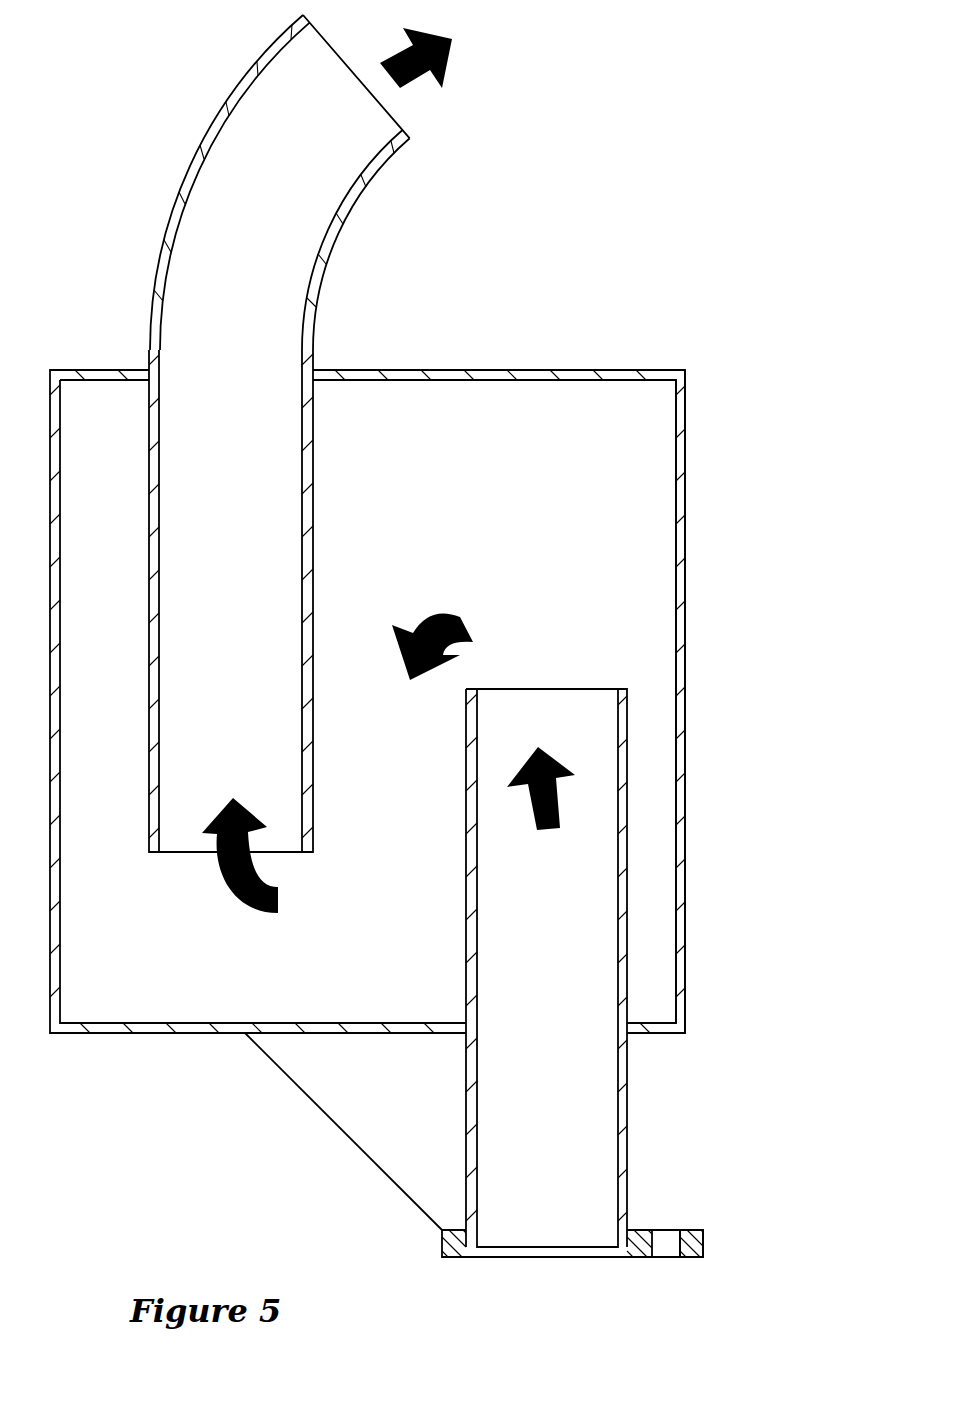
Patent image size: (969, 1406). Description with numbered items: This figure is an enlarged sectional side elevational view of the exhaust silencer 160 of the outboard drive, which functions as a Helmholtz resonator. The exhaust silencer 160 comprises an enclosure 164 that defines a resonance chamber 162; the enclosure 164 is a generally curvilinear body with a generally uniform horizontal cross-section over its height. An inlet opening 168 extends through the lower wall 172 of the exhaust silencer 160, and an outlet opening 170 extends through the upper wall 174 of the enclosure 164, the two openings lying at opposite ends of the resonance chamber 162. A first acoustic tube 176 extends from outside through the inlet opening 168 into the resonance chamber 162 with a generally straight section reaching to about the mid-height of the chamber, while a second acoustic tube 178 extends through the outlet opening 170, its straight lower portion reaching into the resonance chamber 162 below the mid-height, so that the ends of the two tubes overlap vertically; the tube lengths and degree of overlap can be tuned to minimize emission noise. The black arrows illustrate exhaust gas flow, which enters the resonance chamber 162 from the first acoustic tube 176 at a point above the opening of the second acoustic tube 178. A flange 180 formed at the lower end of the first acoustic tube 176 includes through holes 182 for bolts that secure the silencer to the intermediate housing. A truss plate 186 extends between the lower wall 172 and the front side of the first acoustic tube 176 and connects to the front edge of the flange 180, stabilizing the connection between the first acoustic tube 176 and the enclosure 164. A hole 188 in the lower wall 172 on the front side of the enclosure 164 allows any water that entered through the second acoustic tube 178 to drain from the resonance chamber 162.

The exhaust silencer 160 is at (640, 252).
The resonance chamber 162 is at (650, 553).
The enclosure 164 is at (686, 465).
The inlet opening 168 is at (632, 1033).
The outlet opening 170 is at (325, 367).
The lower wall 172 is at (187, 1035).
The upper wall 174 is at (468, 370).
The first acoustic tube 176 is at (625, 1147).
The second acoustic tube 178 is at (313, 540).
The flange 180 is at (685, 1257).
The through holes 182 is at (665, 1240).
The truss plate 186 is at (342, 1130).
The hole 188 is at (95, 1033).